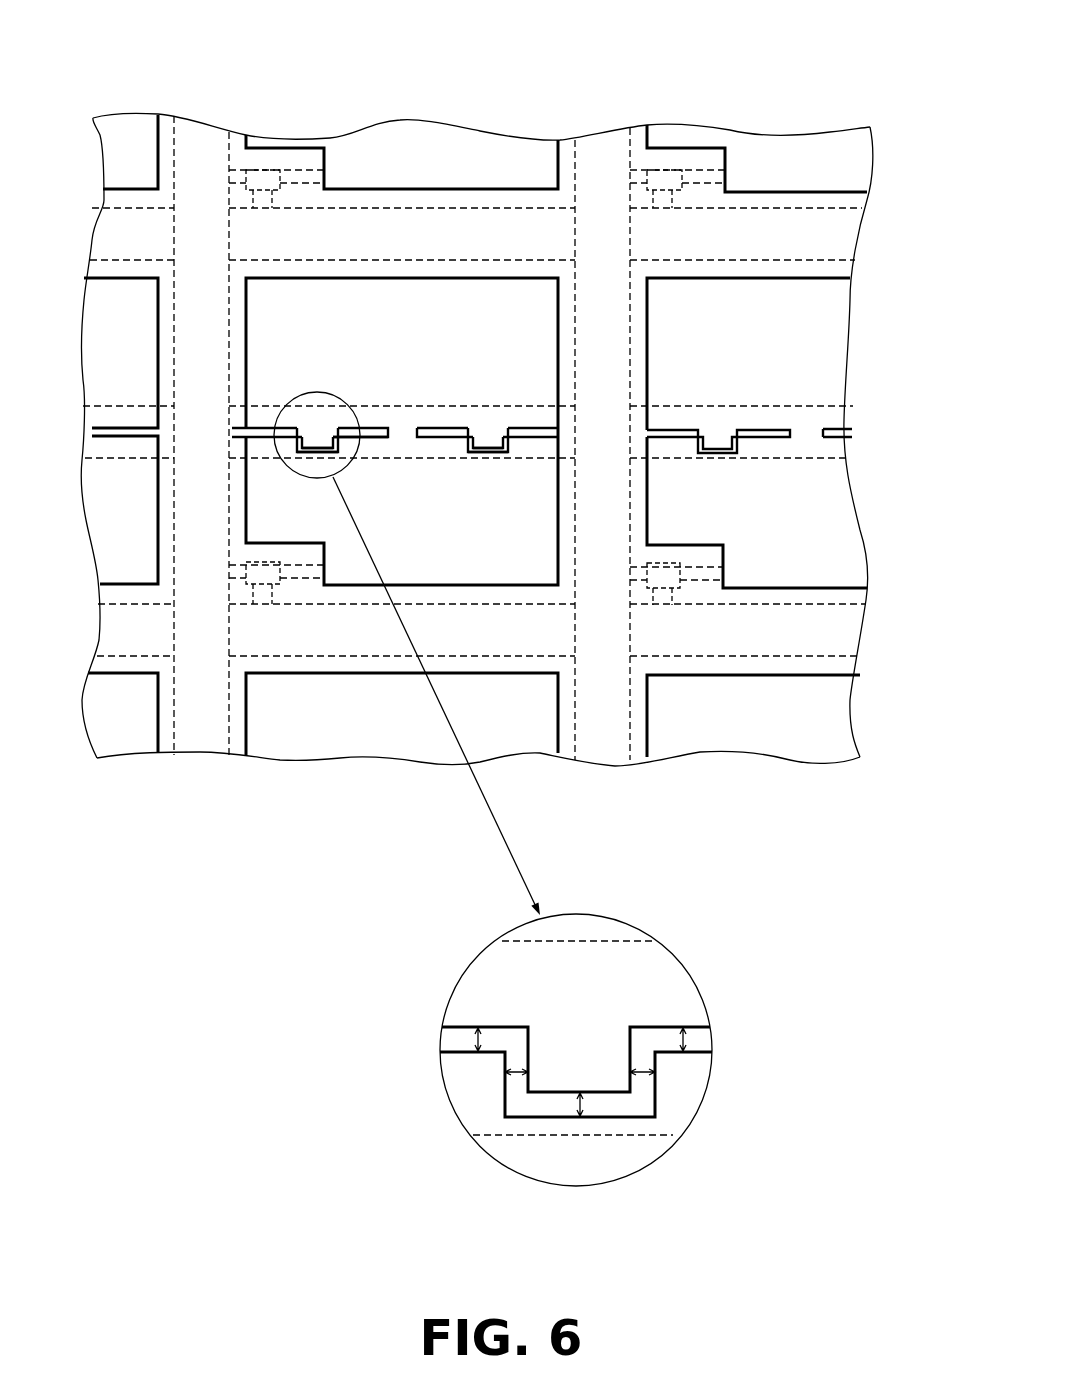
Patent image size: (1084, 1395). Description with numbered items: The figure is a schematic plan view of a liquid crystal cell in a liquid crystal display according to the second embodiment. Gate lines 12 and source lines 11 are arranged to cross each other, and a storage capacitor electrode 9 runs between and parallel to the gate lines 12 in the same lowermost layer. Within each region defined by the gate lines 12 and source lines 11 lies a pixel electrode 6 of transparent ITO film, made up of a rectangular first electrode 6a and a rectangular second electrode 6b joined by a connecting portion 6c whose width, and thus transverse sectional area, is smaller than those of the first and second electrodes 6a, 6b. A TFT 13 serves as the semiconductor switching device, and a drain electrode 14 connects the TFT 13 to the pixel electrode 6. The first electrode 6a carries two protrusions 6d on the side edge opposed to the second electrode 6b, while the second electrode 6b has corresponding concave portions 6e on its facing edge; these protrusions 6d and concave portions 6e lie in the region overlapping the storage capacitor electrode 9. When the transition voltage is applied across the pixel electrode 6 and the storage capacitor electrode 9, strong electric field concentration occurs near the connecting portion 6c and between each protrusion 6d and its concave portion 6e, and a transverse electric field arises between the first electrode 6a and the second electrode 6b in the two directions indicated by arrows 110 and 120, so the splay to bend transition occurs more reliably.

The pixel electrode 6 is at (617, 55).
The first electrode 6a is at (452, 278).
The second electrode 6b is at (567, 433).
The connecting portion 6c is at (422, 432).
The protrusion 6d is at (322, 435).
The concave portion 6e is at (340, 440).
The storage capacitor electrode 9 is at (845, 419).
The source line 11 is at (192, 135).
The gate line 12 is at (832, 242).
The TFT 13 is at (278, 580).
The drain electrode 14 is at (307, 582).
The arrow 110 is at (577, 1103).
The arrow 120 is at (518, 1073).